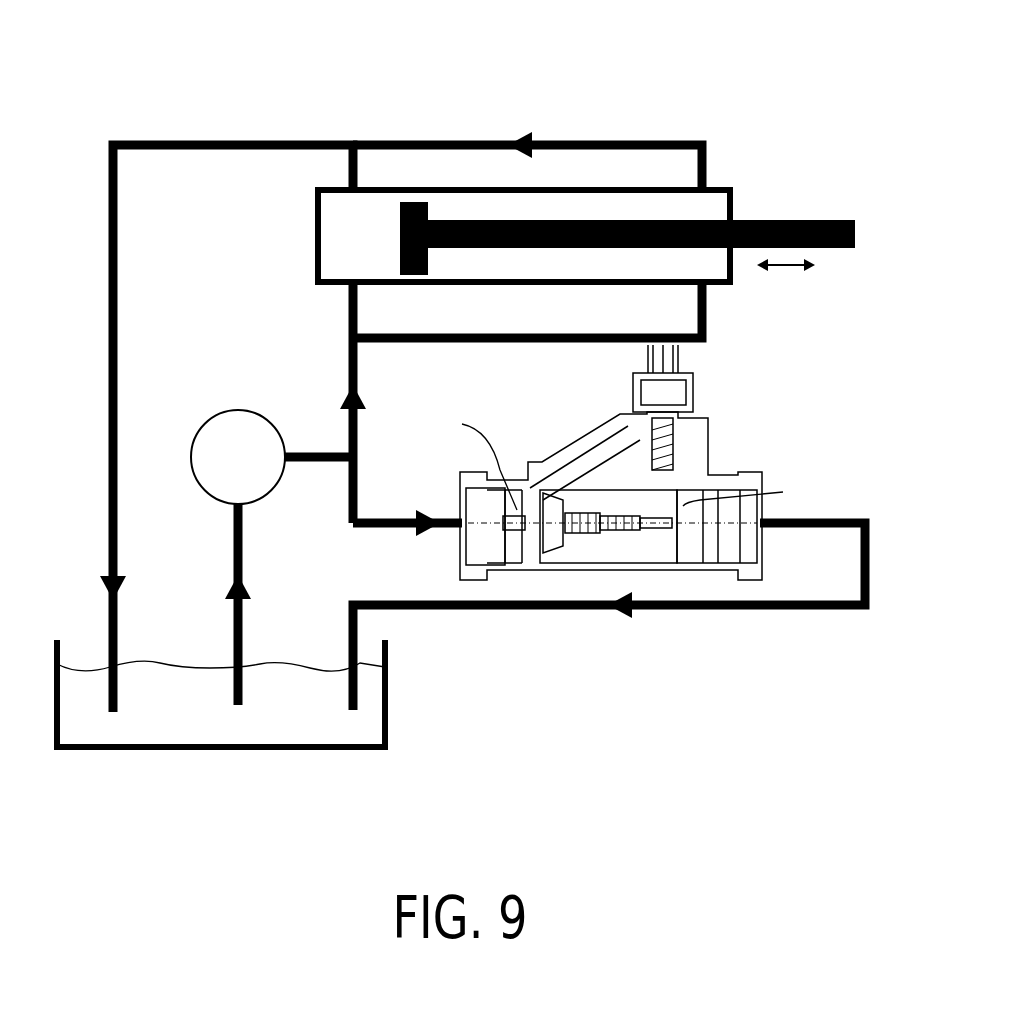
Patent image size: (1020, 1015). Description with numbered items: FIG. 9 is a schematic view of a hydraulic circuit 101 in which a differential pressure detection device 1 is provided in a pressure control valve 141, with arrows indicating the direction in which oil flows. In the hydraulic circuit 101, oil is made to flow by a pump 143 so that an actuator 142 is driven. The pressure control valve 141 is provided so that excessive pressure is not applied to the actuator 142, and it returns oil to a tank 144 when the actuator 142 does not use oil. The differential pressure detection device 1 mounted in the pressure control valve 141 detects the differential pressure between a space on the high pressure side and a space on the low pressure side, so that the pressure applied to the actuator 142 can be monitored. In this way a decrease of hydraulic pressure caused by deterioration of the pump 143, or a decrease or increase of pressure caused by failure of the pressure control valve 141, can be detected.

The hydraulic circuit 101 is at (768, 51).
The actuator 142 is at (712, 210).
The pump 143 is at (226, 416).
The tank 144 is at (346, 735).
The pressure control valve 141 is at (750, 480).
The differential pressure detection device 1 is at (688, 384).